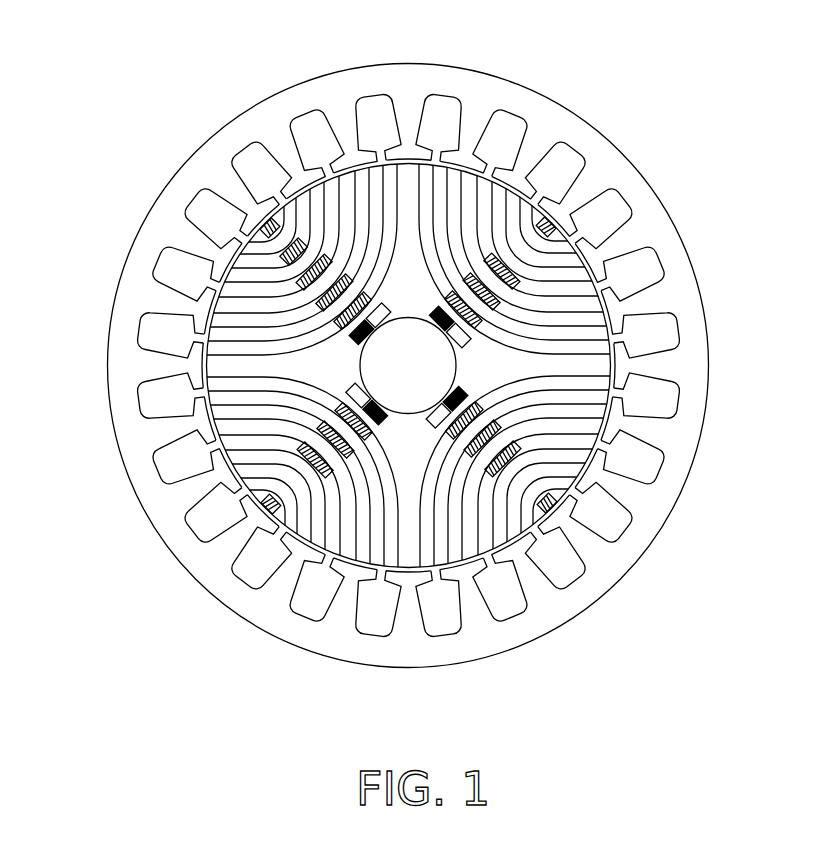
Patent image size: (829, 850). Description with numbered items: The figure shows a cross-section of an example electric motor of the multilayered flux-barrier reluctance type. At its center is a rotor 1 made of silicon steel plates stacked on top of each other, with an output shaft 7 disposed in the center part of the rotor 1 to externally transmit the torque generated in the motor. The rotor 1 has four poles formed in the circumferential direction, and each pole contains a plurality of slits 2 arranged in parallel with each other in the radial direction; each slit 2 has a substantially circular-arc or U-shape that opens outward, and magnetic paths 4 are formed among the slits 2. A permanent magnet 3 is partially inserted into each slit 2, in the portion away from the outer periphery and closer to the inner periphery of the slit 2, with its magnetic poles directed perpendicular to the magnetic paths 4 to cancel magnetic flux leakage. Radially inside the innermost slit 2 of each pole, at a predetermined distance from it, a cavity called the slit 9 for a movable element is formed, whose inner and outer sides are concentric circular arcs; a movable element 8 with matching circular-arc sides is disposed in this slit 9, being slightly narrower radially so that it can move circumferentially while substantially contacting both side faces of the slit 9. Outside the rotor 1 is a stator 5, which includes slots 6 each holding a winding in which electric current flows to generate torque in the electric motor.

The rotor 1 is at (328, 296).
The slits 2 is at (362, 162).
The permanent magnet 3 is at (295, 174).
The magnetic paths 4 is at (470, 213).
The stator 5 is at (642, 197).
The slots 6 is at (652, 397).
The output shaft 7 is at (634, 512).
The movable element 8 is at (407, 573).
The slit for a movable element 9 is at (303, 387).